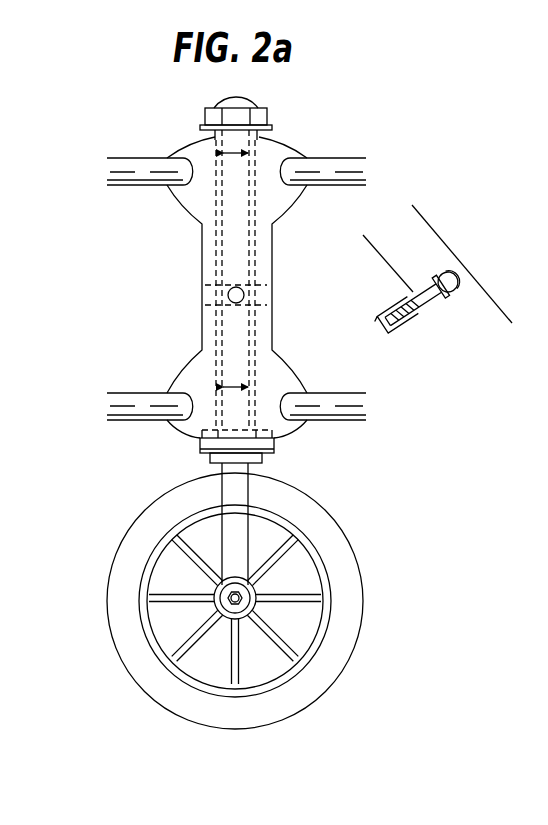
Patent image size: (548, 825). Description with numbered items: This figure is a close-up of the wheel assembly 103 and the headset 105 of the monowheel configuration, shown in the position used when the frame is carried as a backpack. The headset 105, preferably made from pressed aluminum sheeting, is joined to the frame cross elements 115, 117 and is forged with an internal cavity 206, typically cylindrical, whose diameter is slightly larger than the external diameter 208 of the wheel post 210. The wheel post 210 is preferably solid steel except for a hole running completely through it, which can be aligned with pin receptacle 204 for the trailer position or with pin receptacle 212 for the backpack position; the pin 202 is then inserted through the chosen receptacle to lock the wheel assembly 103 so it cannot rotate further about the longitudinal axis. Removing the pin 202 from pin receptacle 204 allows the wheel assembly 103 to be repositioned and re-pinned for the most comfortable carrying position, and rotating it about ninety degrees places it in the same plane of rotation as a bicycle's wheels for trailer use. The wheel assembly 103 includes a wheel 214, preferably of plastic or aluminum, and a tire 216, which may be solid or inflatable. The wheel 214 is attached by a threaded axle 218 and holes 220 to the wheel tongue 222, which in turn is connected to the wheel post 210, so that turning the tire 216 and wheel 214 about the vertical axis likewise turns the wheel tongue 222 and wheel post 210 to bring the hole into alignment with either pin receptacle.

The headset 105 is at (336, 113).
The cross element 115 is at (330, 158).
The cross element 117 is at (330, 393).
The internal cavity 206 is at (215, 143).
The pin receptacle 212 is at (203, 293).
The pin receptacle 204 is at (247, 293).
The external diameter 208 is at (235, 390).
The wheel post 210 is at (219, 414).
The pin 202 is at (463, 300).
The wheel assembly 103 is at (343, 675).
The tire 216 is at (364, 603).
The wheel tongue 222 is at (263, 512).
The wheel 214 is at (330, 593).
The threaded axle 218 is at (220, 608).
The holes 220 is at (223, 598).